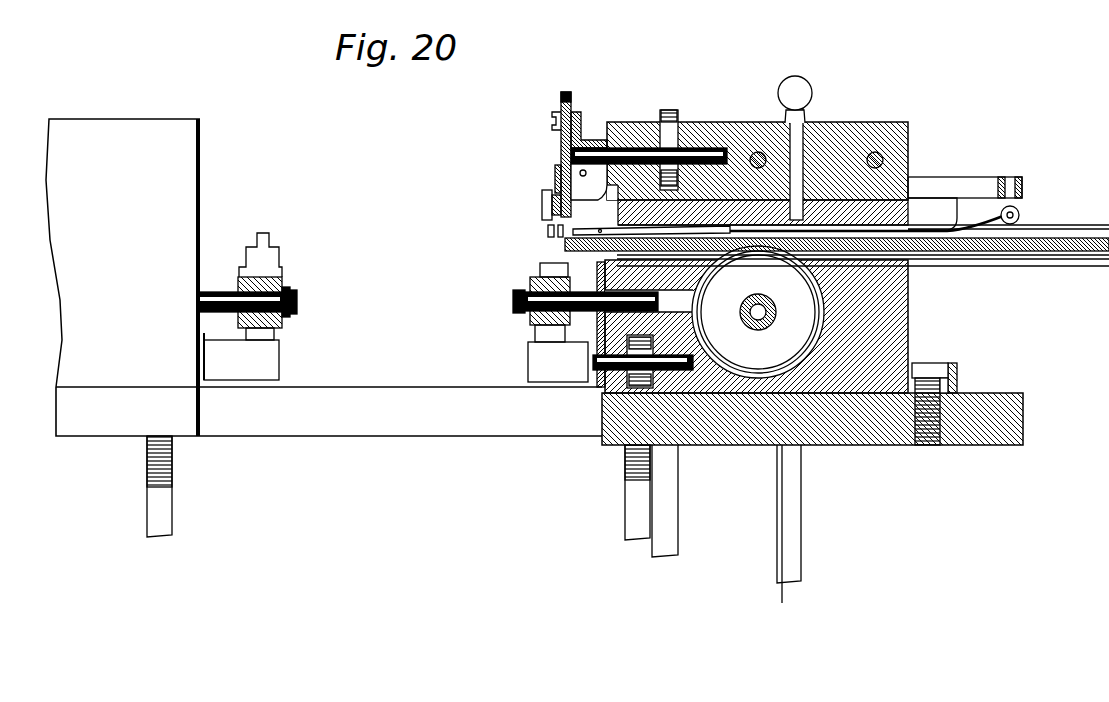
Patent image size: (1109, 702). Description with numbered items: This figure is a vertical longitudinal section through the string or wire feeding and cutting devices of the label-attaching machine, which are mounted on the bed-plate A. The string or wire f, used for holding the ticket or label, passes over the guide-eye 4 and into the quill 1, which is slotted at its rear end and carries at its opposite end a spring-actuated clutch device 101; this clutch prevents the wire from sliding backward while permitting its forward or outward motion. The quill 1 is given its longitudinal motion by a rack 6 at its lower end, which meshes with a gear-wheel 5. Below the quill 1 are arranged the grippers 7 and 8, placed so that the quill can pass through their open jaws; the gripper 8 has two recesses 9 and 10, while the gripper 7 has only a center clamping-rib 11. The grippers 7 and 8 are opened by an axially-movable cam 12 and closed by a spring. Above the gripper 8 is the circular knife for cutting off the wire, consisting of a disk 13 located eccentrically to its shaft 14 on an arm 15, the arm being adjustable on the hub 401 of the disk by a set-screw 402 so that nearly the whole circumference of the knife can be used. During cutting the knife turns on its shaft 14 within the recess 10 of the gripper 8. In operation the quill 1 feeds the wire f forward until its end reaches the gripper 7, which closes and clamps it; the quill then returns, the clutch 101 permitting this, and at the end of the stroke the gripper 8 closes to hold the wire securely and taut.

The quill 1 is at (994, 256).
The guide-eye 4 is at (1021, 213).
The gear-wheel 5 is at (767, 345).
The rack 6 is at (1093, 266).
The gripper 7 is at (268, 262).
The gripper 8 is at (554, 260).
The recess 9 is at (546, 235).
The recess 10 is at (556, 242).
The center clamping-rib 11 is at (264, 236).
The axially-movable cam 12 is at (548, 357).
The disk 13 is at (555, 176).
The shaft 14 is at (690, 150).
The arm 15 is at (572, 96).
The spring-actuated clutch device 101 is at (613, 228).
The hub 401 is at (583, 132).
The set-screw 402 is at (551, 114).
The bed-plate A is at (452, 437).
The string or wire f is at (973, 228).